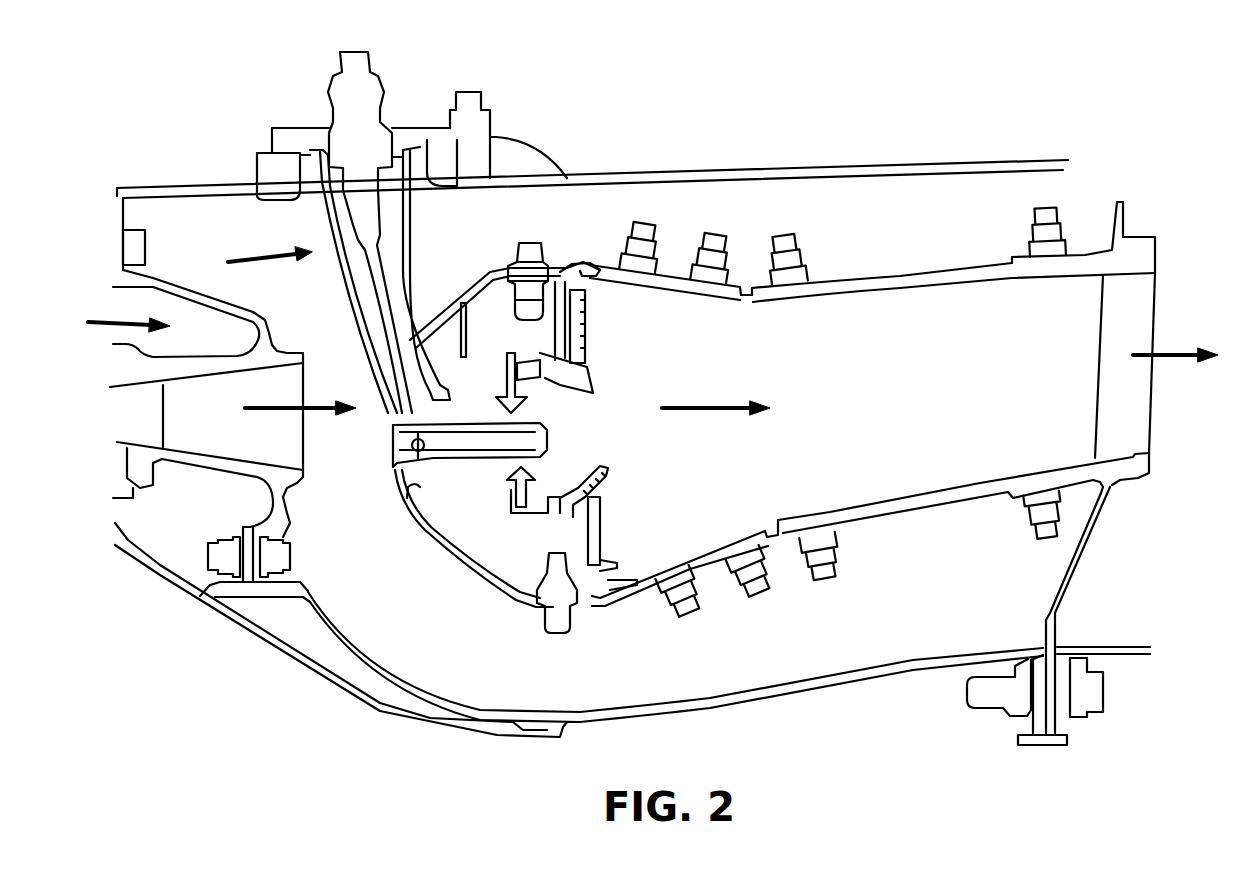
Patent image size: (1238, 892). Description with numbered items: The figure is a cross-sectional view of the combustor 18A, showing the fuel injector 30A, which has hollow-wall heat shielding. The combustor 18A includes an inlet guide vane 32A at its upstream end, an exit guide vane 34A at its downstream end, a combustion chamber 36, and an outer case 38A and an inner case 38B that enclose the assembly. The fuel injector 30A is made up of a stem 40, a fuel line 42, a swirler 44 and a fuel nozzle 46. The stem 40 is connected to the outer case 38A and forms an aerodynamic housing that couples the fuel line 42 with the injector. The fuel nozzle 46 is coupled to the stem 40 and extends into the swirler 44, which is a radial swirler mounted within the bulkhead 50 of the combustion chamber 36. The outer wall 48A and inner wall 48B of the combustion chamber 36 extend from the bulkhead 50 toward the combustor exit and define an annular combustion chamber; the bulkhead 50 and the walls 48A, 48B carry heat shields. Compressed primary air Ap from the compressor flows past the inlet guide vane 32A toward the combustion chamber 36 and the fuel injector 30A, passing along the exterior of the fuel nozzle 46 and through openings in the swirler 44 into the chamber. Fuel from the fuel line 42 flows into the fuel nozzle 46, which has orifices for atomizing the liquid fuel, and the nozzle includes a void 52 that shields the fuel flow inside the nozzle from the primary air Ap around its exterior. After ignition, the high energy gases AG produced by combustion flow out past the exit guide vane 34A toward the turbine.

The combustor 18A is at (576, 212).
The fuel injector 30A is at (428, 85).
The inlet guide vane 32A is at (213, 432).
The exit guide vane 34A is at (1133, 312).
The combustion chamber 36 is at (834, 215).
The outer case 38A is at (700, 168).
The inner case 38B is at (717, 710).
The stem 40 is at (310, 280).
The fuel line 42 is at (358, 324).
The swirler 44 is at (565, 352).
The fuel nozzle 46 is at (468, 486).
The outer wall 48A is at (817, 316).
The inner wall 48B is at (846, 494).
The bulkhead 50 is at (615, 348).
The void 52 is at (452, 432).
The compressed primary air Ap is at (317, 412).
The high energy gases AG is at (698, 420).